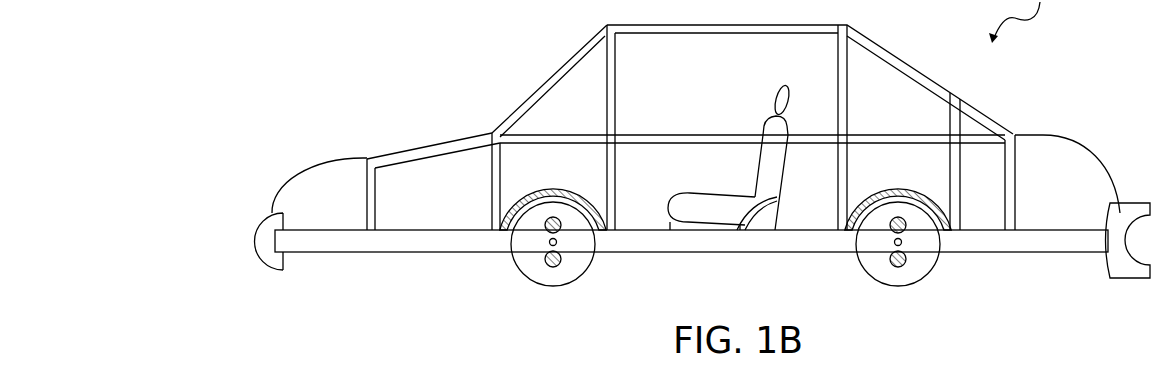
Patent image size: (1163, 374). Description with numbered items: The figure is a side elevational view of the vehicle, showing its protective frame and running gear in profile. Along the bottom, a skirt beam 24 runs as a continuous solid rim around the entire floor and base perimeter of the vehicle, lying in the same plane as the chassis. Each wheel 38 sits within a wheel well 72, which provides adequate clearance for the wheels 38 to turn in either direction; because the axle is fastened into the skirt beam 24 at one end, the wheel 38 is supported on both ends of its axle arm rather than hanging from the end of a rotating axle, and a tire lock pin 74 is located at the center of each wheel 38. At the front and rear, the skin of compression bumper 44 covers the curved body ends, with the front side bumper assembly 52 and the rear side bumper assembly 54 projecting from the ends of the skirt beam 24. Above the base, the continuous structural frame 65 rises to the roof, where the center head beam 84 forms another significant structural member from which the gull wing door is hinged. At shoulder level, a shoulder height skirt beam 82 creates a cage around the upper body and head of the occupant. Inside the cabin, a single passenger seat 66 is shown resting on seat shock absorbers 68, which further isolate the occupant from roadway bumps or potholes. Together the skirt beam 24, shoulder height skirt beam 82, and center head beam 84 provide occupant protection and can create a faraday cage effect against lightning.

The skirt beam 24 is at (683, 247).
The wheel 38 is at (590, 257).
The skin of compression bumper 44 is at (329, 159).
The side bumper assembly (front) 52 is at (412, 253).
The side bumper assembly (rear) 54 is at (1035, 247).
The continuous structural frame 65 is at (538, 83).
The passenger seat 66 is at (774, 117).
The seat shock absorbers 68 is at (740, 231).
The wheel well 72 is at (521, 197).
The tire lock pin 74 is at (547, 241).
The shoulder height skirt beam 82 is at (653, 138).
The center head beam 84 is at (796, 34).